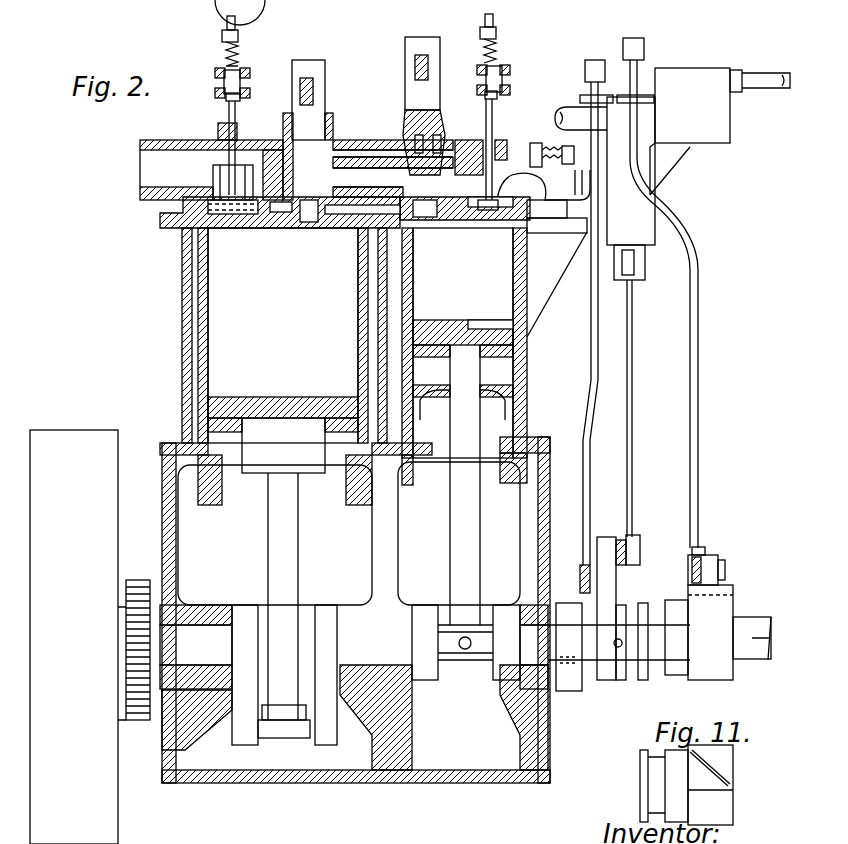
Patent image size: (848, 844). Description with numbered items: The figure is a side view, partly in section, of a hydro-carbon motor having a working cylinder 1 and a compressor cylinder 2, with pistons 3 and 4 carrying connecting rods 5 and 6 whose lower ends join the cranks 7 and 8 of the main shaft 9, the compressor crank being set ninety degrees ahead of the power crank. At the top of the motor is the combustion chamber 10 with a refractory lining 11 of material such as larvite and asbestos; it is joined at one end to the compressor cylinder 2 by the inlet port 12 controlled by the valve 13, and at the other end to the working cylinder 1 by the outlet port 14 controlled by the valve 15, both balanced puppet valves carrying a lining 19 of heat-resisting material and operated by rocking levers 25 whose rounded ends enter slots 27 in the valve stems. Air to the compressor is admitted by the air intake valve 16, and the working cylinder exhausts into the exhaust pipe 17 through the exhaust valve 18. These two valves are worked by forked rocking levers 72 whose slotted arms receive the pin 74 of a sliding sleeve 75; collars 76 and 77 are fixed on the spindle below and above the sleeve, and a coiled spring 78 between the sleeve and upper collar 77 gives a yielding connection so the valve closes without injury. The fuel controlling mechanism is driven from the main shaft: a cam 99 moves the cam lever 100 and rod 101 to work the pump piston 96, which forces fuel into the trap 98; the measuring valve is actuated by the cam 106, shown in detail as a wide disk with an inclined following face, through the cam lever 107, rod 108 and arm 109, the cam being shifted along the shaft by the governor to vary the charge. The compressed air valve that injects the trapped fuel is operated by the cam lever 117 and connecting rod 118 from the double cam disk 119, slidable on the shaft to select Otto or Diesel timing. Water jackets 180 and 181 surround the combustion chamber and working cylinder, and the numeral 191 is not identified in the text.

In FIG. 2, the working cylinder 1 is at (212, 307).
In FIG. 2, the compressor cylinder 2 is at (412, 291).
In FIG. 2, the piston 3 is at (230, 405).
In FIG. 2, the piston 4 is at (456, 323).
In FIG. 2, the connecting rod 5 is at (290, 552).
In FIG. 2, the connecting rod 6 is at (465, 496).
In FIG. 2, the crank 7 is at (274, 725).
In FIG. 2, the crank 8 is at (425, 672).
In FIG. 2, the main shaft 9 is at (527, 652).
In FIG. 2, the combustion chamber 10 is at (393, 169).
In FIG. 2, the lining 11 is at (393, 178).
In FIG. 2, the inlet port 12 is at (420, 216).
In FIG. 2, the valve 13 is at (444, 150).
In FIG. 2, the outlet port 14 is at (318, 215).
In FIG. 2, the valve 15 is at (305, 200).
In FIG. 2, the air intake valve 16 is at (492, 212).
In FIG. 2, the exhaust pipe 17 is at (211, 170).
In FIG. 2, the exhaust valve 18 is at (220, 200).
In FIG. 2, the lining 19 is at (376, 160).
In FIG. 2, the rocking lever 25 is at (315, 90).
In FIG. 2, the slot 27 is at (305, 78).
In FIG. 2, the rocking lever 72 is at (248, 73).
In FIG. 2, the pin 74 is at (505, 78).
In FIG. 2, the sliding sleeve 75 is at (558, 118).
In FIG. 2, the collar 76 is at (240, 97).
In FIG. 2, the collar 77 is at (240, 35).
In FIG. 2, the coiled spring 78 is at (240, 55).
In FIG. 2, the pump piston 96 is at (635, 270).
In FIG. 2, the trap 98 is at (543, 171).
In FIG. 2, the cam 99 is at (614, 580).
In FIG. 2, the cam lever 100 is at (626, 545).
In FIG. 2, the rod 101 is at (630, 376).
In FIG. 2, the cam 106 is at (715, 615).
In FIG. 11, the cam 106 is at (728, 768).
In FIG. 2, the cam lever 107 is at (718, 566).
In FIG. 2, the rod 108 is at (700, 280).
In FIG. 2, the arm 109 is at (643, 47).
In FIG. 2, the cam lever 117 is at (580, 572).
In FIG. 2, the connecting rod 118 is at (583, 446).
In FIG. 2, the cam disk 119 is at (580, 672).
In FIG. 2, the water jacket 180 is at (355, 150).
In FIG. 2, the water jacket 181 is at (190, 296).
In FIG. 2, the passage 191 is at (318, 180).